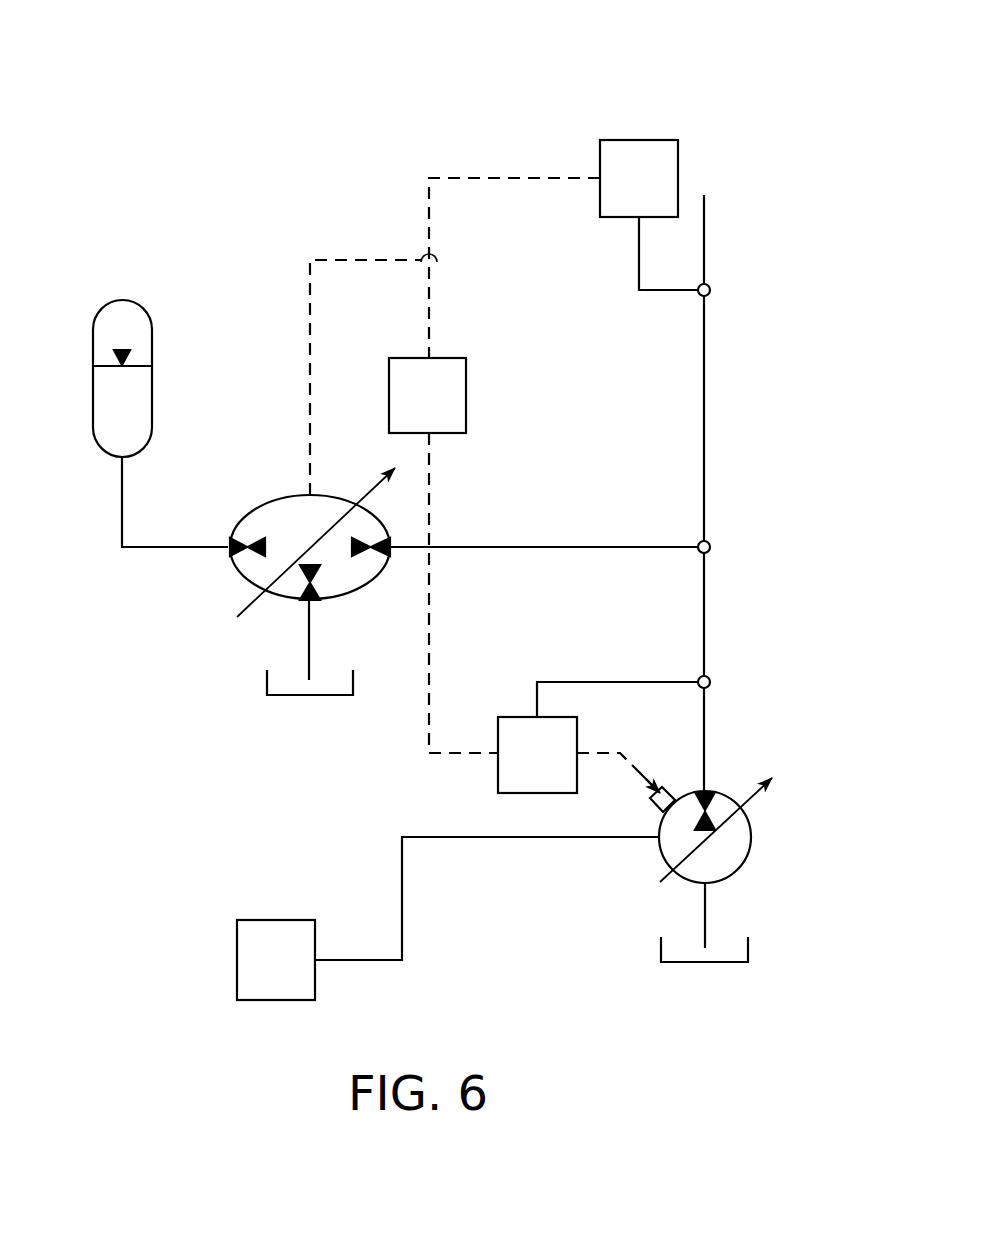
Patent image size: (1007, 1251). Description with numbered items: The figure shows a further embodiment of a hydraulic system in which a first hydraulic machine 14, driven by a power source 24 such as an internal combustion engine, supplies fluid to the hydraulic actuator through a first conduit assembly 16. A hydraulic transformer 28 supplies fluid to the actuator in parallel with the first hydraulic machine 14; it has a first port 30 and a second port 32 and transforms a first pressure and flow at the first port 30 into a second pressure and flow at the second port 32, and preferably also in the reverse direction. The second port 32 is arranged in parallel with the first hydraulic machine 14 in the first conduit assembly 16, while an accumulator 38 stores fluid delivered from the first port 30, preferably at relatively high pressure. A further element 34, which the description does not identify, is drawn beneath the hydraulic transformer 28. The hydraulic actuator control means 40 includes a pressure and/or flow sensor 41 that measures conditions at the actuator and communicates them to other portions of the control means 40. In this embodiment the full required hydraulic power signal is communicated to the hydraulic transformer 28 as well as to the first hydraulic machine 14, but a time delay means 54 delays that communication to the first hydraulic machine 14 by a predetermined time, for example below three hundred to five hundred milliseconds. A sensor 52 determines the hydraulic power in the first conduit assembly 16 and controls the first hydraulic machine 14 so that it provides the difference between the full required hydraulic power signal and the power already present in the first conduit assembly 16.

The first hydraulic machine 14 is at (745, 872).
The first conduit assembly 16 is at (618, 575).
The power source 24 is at (447, 918).
The hydraulic transformer 28 is at (270, 493).
The first port 30 is at (219, 560).
The second port 32 is at (400, 537).
The drain line to tank 34 is at (318, 607).
The accumulator 38 is at (137, 295).
The hydraulic actuator control means 40 is at (297, 107).
The pressure sensor and/or flow sensor 41 is at (649, 215).
The sensor 52 is at (598, 737).
The time delay means 54 is at (427, 395).